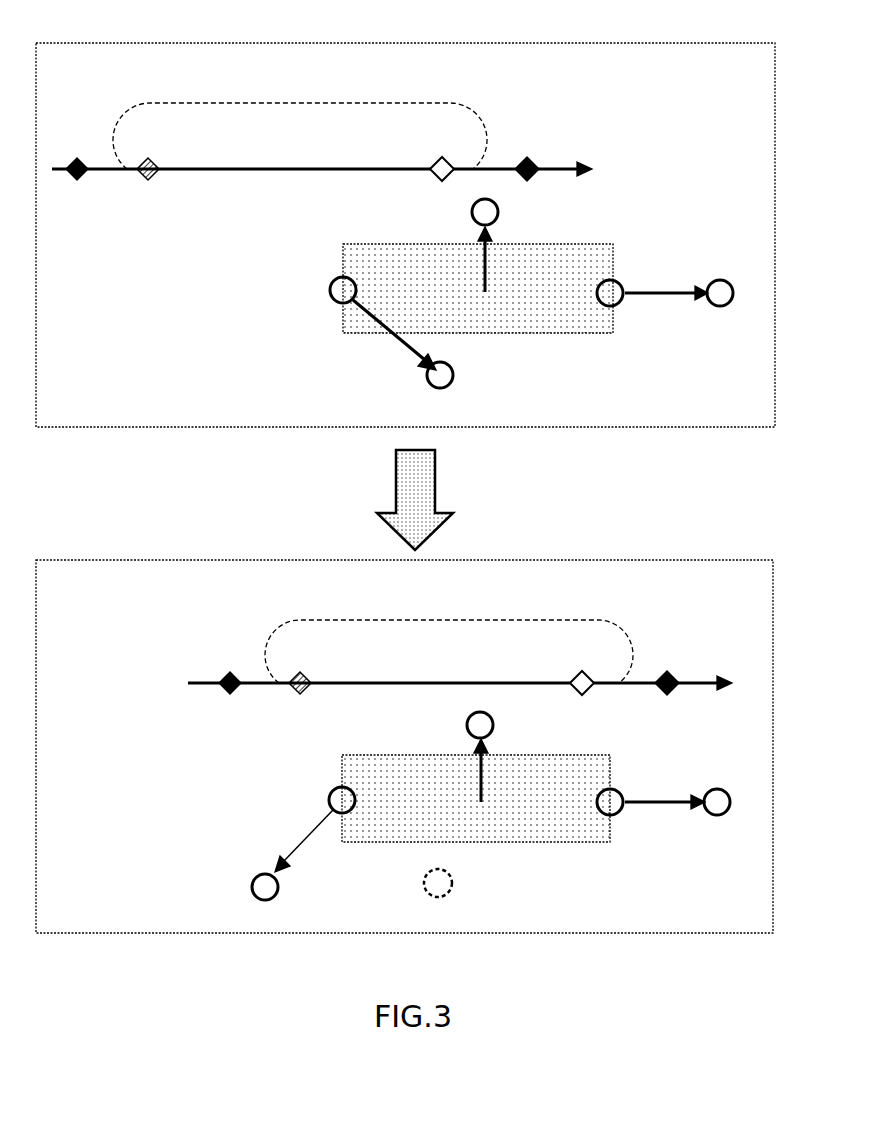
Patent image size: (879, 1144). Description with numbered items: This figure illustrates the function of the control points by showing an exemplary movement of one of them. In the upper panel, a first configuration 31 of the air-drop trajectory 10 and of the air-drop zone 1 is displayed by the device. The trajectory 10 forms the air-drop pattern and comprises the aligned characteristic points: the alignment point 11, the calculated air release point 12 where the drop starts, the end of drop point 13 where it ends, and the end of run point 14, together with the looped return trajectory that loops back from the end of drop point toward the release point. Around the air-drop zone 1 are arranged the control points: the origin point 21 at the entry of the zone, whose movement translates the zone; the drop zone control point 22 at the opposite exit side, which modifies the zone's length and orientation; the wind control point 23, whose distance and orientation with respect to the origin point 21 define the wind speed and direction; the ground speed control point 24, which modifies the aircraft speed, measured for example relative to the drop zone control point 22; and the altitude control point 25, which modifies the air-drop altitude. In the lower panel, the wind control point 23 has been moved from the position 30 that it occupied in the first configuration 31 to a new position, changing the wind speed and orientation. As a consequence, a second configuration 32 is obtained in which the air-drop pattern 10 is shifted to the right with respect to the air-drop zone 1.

The air-drop zone 1 is at (515, 322).
The trajectory 10 is at (497, 88).
The alignment point AP 11 is at (82, 158).
The calculated air release point CARP 12 is at (154, 158).
The end of drop point EOD 13 is at (440, 158).
The end of run point EORP 14 is at (531, 158).
The control point Po 21 is at (330, 284).
The control point Pdzw 22 is at (604, 307).
The control point Pws 23 is at (426, 382).
The control point Pgs 24 is at (722, 320).
The control point Pa 25 is at (498, 210).
The position of the first configuration 30 is at (424, 892).
The first configuration 31 is at (712, 41).
The second configuration 32 is at (712, 558).